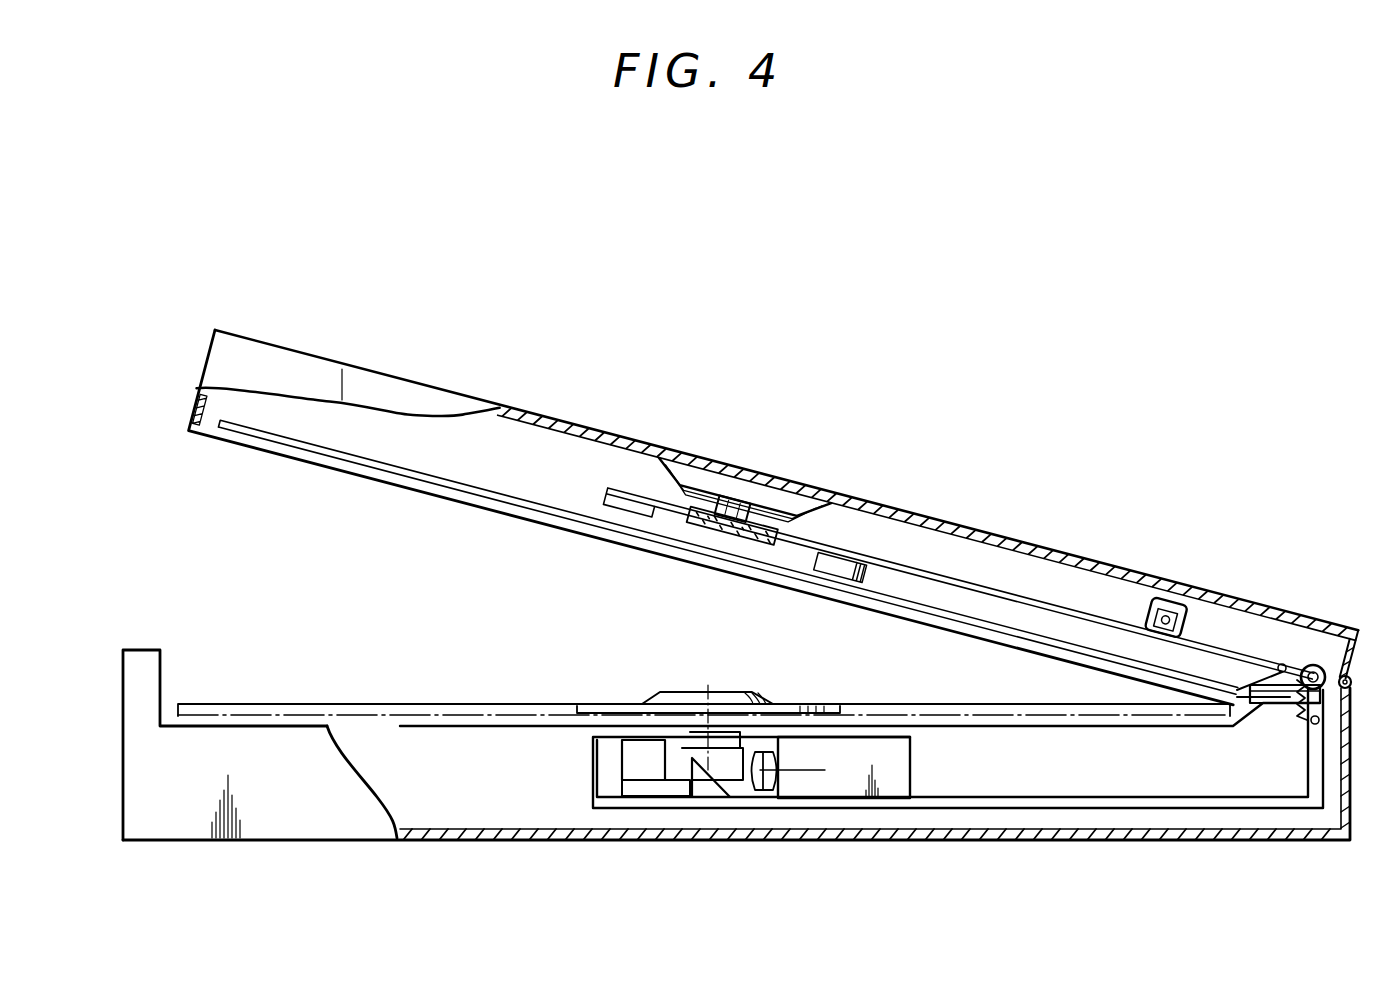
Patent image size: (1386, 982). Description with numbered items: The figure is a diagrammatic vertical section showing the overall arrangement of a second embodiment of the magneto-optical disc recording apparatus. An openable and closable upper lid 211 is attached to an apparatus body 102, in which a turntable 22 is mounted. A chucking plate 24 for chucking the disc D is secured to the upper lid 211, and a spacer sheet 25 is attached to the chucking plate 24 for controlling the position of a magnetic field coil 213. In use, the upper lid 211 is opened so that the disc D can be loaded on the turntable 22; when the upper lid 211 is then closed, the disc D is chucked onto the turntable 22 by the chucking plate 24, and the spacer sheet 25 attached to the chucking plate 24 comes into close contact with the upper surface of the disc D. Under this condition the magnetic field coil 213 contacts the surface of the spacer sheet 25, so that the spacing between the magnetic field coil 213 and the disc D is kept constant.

The upper lid 211 is at (367, 365).
The spacer sheet 25 is at (505, 487).
The chucking plate 24 is at (635, 515).
The magnetic field coil 213 is at (712, 508).
The apparatus body 102 is at (278, 714).
The disc D is at (427, 702).
The turntable 22 is at (598, 706).